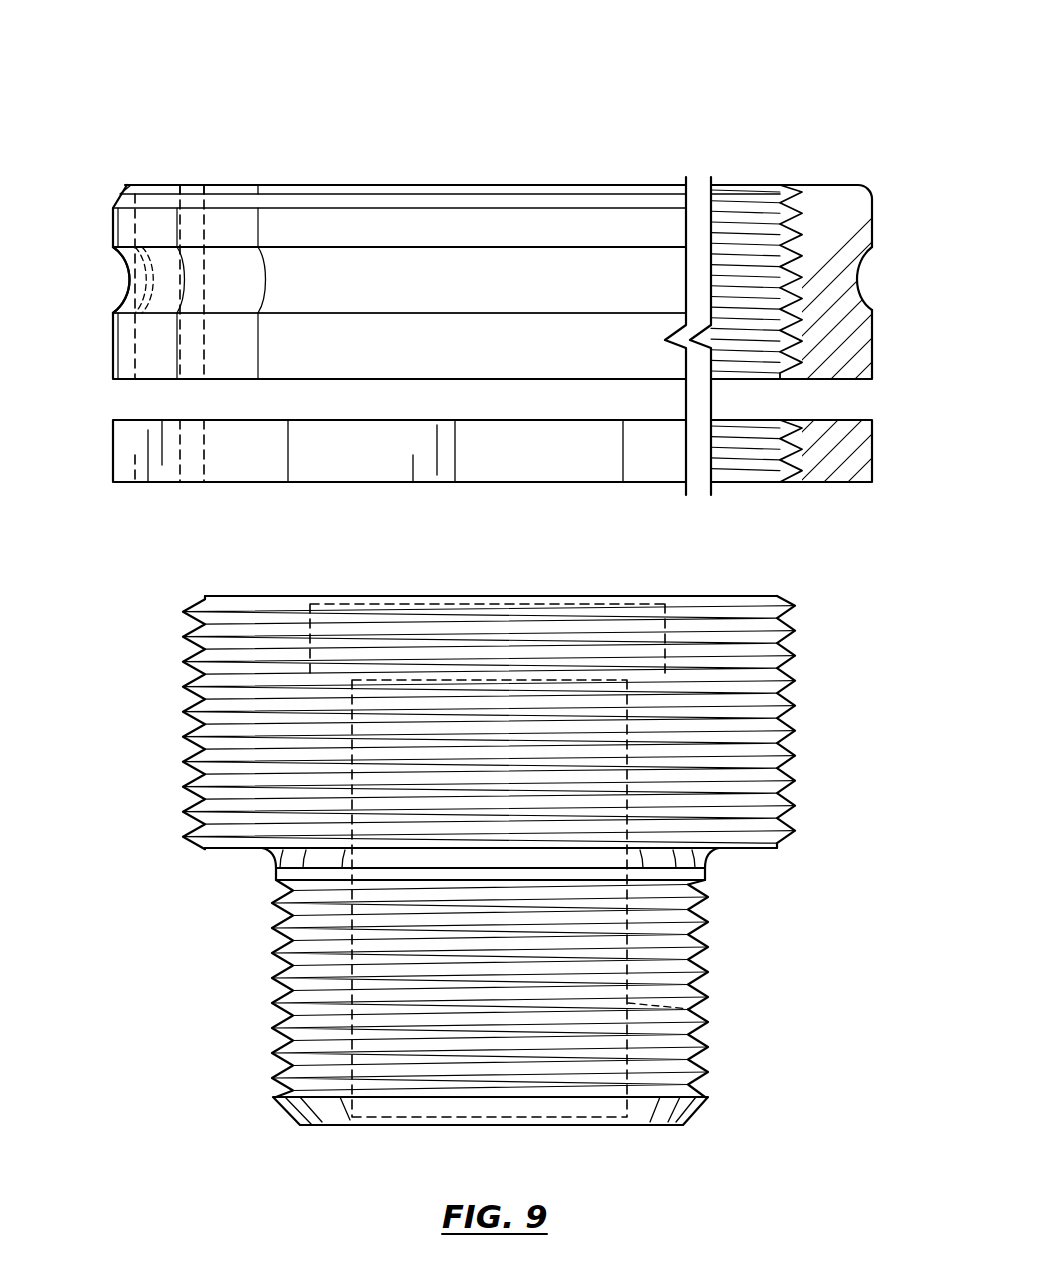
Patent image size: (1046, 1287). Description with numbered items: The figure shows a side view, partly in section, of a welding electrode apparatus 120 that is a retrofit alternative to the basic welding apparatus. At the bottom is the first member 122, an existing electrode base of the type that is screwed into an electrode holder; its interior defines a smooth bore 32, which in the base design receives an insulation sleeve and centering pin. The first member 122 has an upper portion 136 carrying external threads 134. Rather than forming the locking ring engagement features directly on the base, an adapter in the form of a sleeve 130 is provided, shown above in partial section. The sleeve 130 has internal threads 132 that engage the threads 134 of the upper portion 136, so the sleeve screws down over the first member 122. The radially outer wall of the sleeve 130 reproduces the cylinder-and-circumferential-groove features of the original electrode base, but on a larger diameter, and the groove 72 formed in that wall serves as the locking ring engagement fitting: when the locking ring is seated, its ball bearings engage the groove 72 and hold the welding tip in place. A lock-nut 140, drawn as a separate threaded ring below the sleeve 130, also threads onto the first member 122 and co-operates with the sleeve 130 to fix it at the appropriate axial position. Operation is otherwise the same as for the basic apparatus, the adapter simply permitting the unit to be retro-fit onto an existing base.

The welding electrode apparatus 120 is at (186, 84).
The sleeve 130 is at (420, 184).
The internal threads 132 is at (781, 246).
The groove 72 is at (128, 279).
The threads 134 is at (140, 350).
The lock-nut 140 is at (140, 455).
The upper portion 136 is at (750, 745).
The first member 122 is at (273, 1000).
The bore 32 is at (700, 1012).